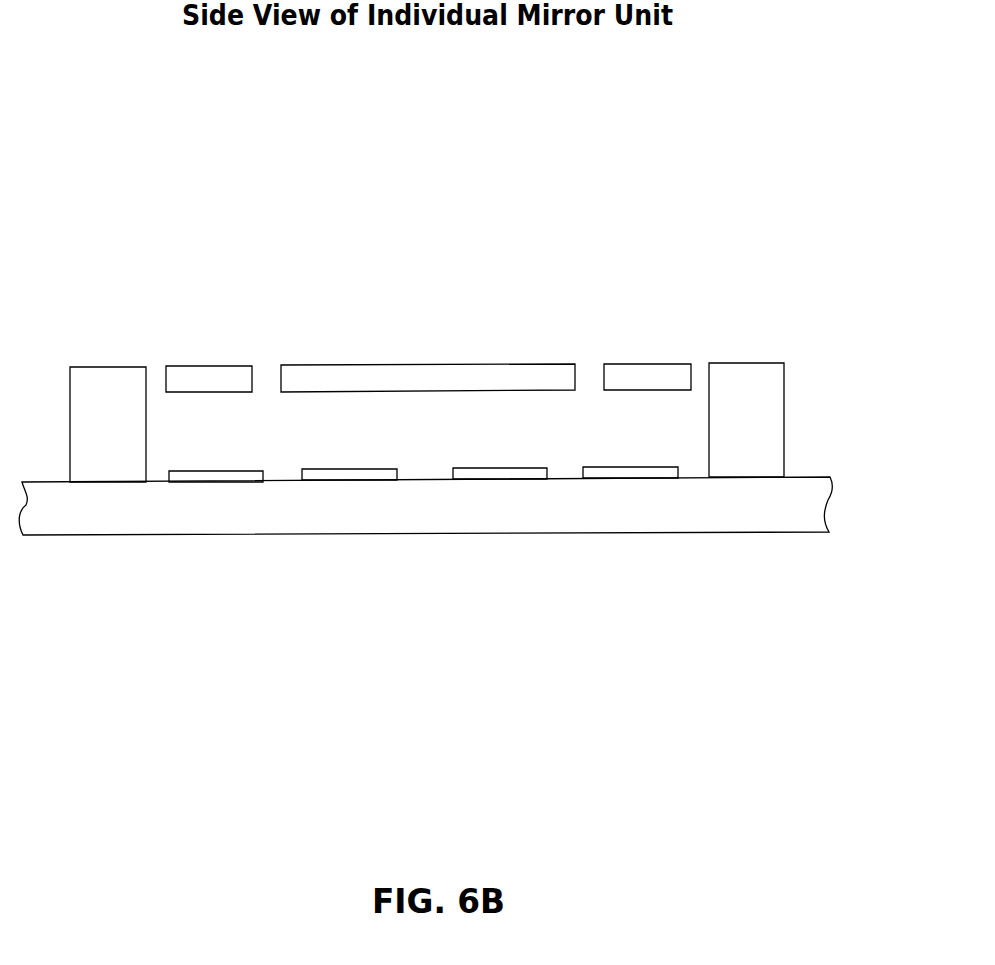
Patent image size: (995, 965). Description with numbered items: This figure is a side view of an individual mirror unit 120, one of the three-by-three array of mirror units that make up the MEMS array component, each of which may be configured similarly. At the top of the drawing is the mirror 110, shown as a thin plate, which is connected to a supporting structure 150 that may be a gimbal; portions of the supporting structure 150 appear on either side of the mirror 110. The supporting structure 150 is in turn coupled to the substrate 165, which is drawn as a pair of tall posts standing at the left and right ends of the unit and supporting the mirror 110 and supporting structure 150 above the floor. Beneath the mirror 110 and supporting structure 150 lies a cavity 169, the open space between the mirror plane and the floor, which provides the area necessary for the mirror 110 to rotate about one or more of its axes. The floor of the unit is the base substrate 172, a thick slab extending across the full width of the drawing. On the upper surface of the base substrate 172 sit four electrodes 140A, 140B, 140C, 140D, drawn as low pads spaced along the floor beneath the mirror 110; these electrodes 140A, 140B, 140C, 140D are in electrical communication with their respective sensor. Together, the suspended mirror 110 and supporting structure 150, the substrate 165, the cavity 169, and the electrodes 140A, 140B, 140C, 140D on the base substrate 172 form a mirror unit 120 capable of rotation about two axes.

The mirror unit 120 is at (111, 221).
The mirror 110 is at (448, 363).
The supporting structure 150 is at (213, 365).
The substrate 165 is at (95, 368).
The cavity 169 is at (526, 435).
The base substrate 172 is at (130, 518).
The electrode 140A is at (517, 475).
The electrode 140B is at (652, 475).
The electrode 140C is at (345, 475).
The electrode 140D is at (207, 475).